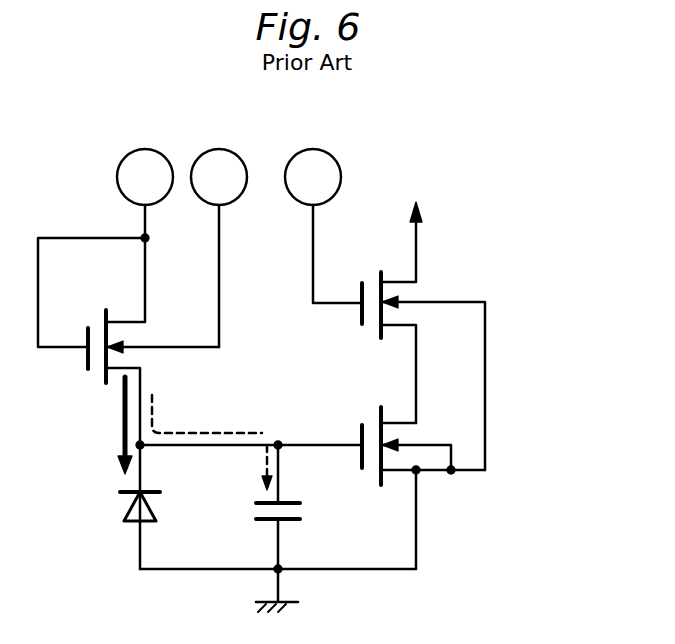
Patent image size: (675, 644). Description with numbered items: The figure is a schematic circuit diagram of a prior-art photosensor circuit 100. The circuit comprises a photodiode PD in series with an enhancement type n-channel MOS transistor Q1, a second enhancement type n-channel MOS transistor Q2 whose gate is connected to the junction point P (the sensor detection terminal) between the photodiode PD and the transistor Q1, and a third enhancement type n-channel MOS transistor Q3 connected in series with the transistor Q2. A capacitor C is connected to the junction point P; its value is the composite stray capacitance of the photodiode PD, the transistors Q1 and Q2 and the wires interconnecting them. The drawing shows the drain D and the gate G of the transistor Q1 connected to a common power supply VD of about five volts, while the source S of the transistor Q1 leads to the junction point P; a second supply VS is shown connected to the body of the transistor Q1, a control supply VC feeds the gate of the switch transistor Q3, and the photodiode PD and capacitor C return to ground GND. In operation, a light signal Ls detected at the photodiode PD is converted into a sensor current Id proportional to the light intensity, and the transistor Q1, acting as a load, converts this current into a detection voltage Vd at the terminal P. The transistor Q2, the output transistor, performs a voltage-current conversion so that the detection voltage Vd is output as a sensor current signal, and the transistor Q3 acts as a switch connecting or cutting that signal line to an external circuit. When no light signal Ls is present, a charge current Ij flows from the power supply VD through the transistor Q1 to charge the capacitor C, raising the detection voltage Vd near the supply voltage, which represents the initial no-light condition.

The photosensor circuit 100 is at (272, 140).
The power supply VD is at (145, 193).
The substrate voltage source VS is at (219, 248).
The control voltage source VC is at (323, 226).
The enhancement type n-channel MOS transistor Q1 is at (128, 339).
The drain D is at (158, 321).
The gate G is at (77, 373).
The source of Q1 S is at (157, 373).
The sensor current Id is at (114, 425).
The charge current Ij is at (212, 442).
The junction point P is at (278, 445).
The detection voltage Vd is at (323, 431).
The capacitor C is at (288, 507).
The photodiode PD is at (122, 507).
The light signal Ls is at (122, 548).
The ground GND is at (305, 593).
The enhancement type n-channel MOS transistor Q2 is at (411, 480).
The enhancement type n-channel MOS transistor Q3 is at (411, 336).